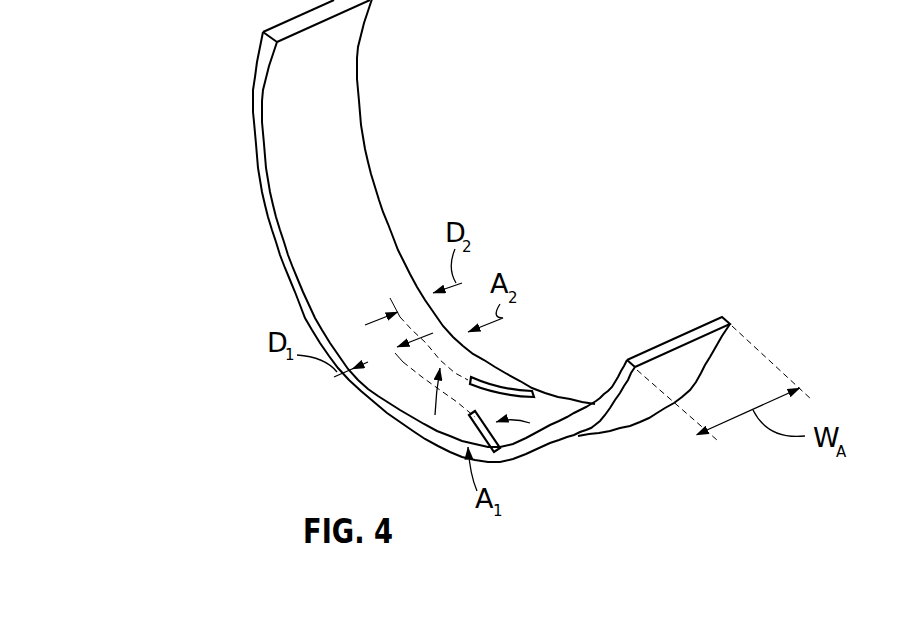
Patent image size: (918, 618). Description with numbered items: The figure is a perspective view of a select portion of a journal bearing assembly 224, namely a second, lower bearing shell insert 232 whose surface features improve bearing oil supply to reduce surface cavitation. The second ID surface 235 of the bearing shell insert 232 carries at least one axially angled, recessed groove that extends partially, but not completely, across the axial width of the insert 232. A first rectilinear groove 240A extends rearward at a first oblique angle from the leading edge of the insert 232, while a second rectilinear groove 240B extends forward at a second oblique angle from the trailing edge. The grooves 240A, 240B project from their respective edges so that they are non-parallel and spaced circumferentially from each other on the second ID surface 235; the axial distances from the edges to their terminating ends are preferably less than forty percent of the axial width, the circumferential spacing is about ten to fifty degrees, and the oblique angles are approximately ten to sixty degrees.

The journal bearing assembly 224 is at (165, 80).
The second bearing shell insert 232 is at (257, 138).
The second ID surface 235 is at (350, 100).
The first rectilinear groove 240A is at (477, 421).
The second rectilinear groove 240B is at (505, 387).